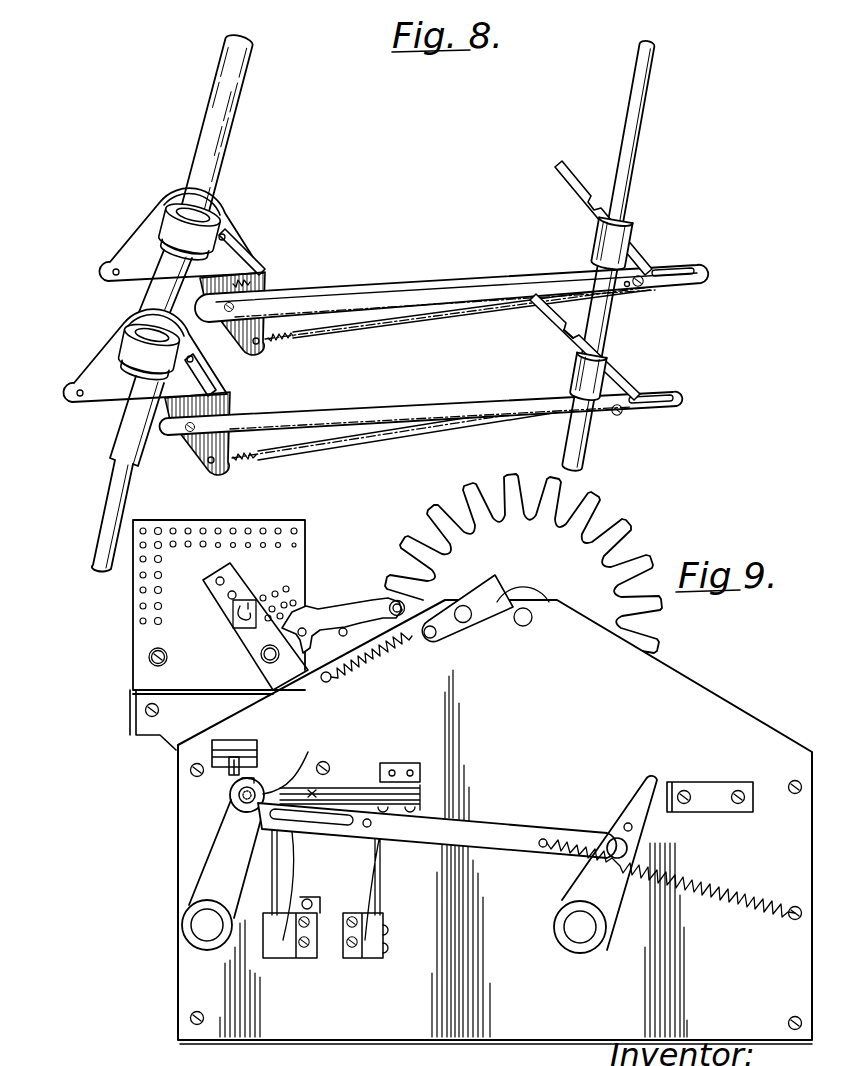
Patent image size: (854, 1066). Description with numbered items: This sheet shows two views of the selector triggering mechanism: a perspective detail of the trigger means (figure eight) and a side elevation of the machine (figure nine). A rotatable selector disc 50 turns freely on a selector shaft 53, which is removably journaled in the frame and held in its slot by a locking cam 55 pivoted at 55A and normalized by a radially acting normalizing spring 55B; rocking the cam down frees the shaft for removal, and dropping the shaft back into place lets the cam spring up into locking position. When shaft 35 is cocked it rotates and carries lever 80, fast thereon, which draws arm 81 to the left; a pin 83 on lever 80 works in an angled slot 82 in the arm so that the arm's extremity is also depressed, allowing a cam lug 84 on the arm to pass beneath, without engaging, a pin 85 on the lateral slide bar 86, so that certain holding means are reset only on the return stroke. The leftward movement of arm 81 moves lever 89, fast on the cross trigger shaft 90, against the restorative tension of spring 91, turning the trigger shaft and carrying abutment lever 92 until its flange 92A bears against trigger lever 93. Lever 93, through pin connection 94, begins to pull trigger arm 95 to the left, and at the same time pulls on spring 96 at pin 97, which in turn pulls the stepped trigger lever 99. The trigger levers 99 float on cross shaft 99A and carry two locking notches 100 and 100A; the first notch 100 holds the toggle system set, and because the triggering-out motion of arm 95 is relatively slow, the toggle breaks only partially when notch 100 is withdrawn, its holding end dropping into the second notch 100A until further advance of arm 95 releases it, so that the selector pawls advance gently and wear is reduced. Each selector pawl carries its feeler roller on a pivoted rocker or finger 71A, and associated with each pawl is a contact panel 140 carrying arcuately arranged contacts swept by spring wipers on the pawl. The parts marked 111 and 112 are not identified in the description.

In FIG. 9, the shaft 35 is at (208, 932).
In FIG. 9, the selector disc 50 is at (523, 583).
In FIG. 9, the selector shaft 53 is at (529, 625).
In FIG. 9, the locking cam 55 is at (486, 628).
In FIG. 9, the cam pivot 55A is at (440, 638).
In FIG. 9, the normalizing spring 55B is at (376, 667).
In FIG. 9, the rocker or finger 71A is at (348, 605).
In FIG. 9, the lever 80 is at (234, 875).
In FIG. 9, the arm 81 is at (496, 828).
In FIG. 9, the angled slot 82 is at (240, 803).
In FIG. 9, the pin 83 is at (299, 770).
In FIG. 9, the cam lug 84 is at (257, 784).
In FIG. 9, the pin 85 is at (231, 767).
In FIG. 9, the lateral slide bar 86 is at (258, 749).
In FIG. 9, the lever 89 is at (592, 877).
In FIG. 8, the cross trigger shaft 90 is at (178, 302).
In FIG. 9, the cross trigger shaft 90 is at (583, 935).
In FIG. 9, the spring 91 is at (740, 893).
In FIG. 8, the abutment lever 92 is at (140, 237).
In FIG. 8, the flange 92A is at (238, 242).
In FIG. 8, the trigger lever 93 is at (240, 290).
In FIG. 8, the pin connection 94 is at (185, 438).
In FIG. 8, the trigger arm 95 is at (401, 287).
In FIG. 8, the spring 96 is at (404, 321).
In FIG. 8, the pin 97 is at (211, 464).
In FIG. 8, the stepped trigger lever 99 is at (566, 338).
In FIG. 8, the cross shaft 99A is at (585, 451).
In FIG. 8, the first locking notch 100 is at (560, 314).
In FIG. 8, the second locking notch 100A is at (577, 325).
In FIG. 8, the pin 111 is at (629, 290).
In FIG. 8, the screw 112 is at (645, 284).
In FIG. 9, the contact panel 140 is at (163, 569).